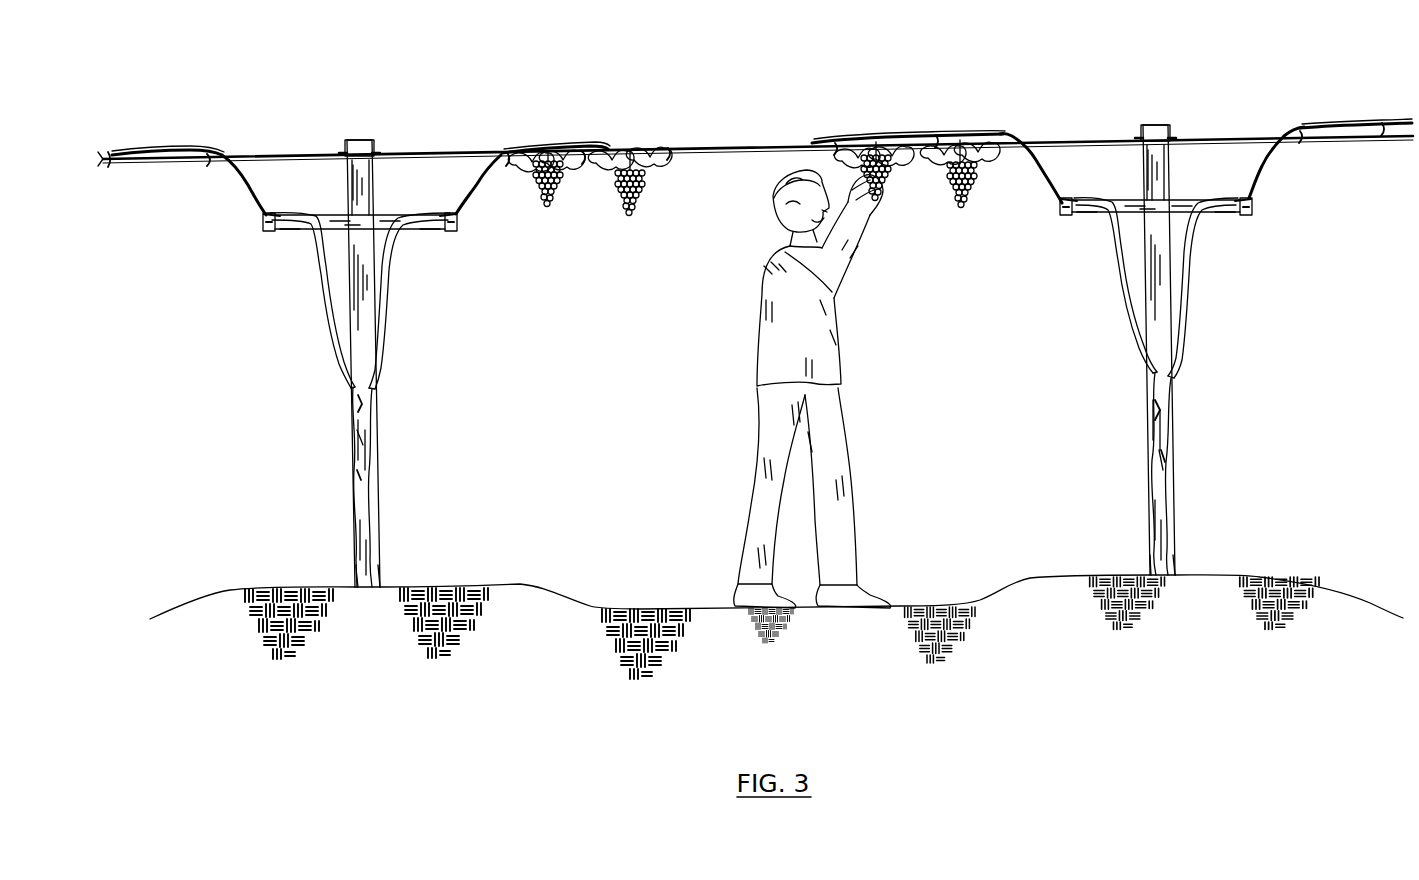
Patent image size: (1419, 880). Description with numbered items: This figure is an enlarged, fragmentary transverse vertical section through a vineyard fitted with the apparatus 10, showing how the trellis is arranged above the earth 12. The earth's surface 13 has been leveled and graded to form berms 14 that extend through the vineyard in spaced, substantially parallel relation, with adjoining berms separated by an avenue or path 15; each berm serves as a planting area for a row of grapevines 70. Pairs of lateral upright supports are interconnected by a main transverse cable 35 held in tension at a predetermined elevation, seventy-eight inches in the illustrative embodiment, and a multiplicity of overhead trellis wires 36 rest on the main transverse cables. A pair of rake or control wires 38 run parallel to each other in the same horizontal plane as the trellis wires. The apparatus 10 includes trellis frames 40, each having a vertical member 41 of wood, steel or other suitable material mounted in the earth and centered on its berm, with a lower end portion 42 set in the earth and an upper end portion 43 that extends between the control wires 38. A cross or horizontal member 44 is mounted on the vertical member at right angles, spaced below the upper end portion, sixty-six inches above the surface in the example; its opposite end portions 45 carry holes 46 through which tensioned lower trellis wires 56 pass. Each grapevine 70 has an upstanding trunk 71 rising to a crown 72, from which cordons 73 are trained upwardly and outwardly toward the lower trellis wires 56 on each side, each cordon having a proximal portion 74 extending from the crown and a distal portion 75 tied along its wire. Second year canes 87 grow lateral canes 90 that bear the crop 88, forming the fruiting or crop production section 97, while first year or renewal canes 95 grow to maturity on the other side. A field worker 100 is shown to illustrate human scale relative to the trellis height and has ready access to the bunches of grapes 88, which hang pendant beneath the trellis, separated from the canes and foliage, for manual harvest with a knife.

The apparatus 10 is at (1234, 90).
The earth 12 is at (1005, 610).
The earth's surface 13 is at (612, 608).
The berms 14 is at (420, 585).
The avenue or path 15 is at (702, 606).
The main transverse cable 35 is at (1244, 139).
The overhead trellis wires 36 is at (123, 160).
The rake or control wires 38 is at (345, 154).
The trellis frames 40 is at (364, 140).
The vertical member 41 is at (378, 405).
The lower end portion 42 is at (381, 566).
The upper end portion 43 is at (362, 163).
The cross or horizontal member 44 is at (348, 220).
The opposite end portions 45 is at (280, 232).
The holes 46 is at (265, 226).
The lower trellis wires 56 is at (270, 232).
The grapevines 70 is at (355, 412).
The trunk 71 is at (357, 453).
The crown 72 is at (355, 385).
The cordons 73 is at (330, 279).
The proximal portion 74 is at (336, 326).
The distal portion 75 is at (262, 219).
The second year canes 87 is at (520, 148).
The crop 88 is at (628, 196).
The lateral canes 90 is at (549, 162).
The first year or renewal canes 95 is at (167, 150).
The fruiting or crop production section 97 is at (777, 116).
The field worker 100 is at (756, 384).